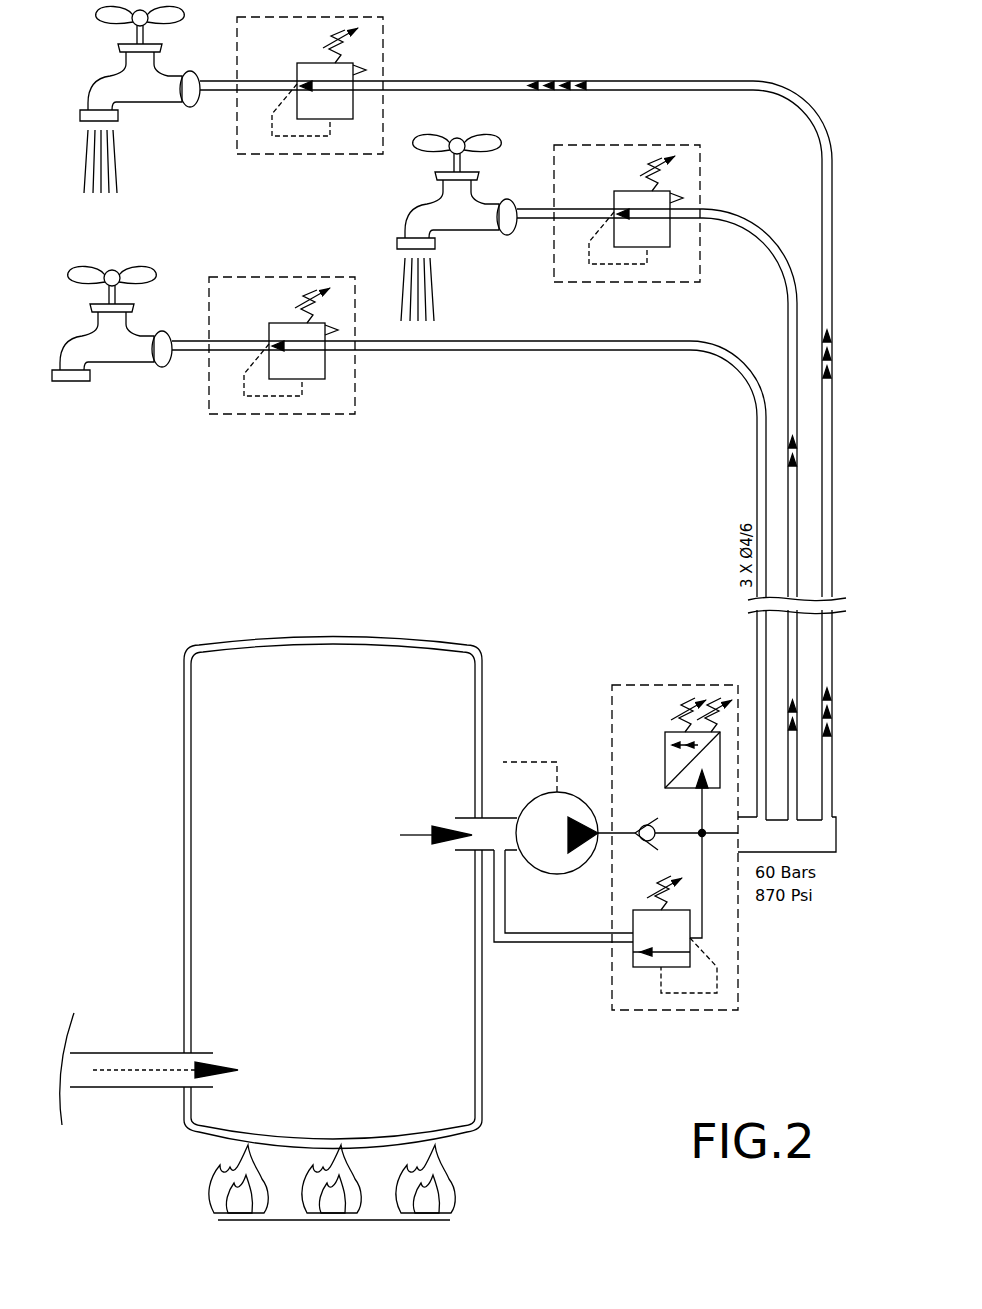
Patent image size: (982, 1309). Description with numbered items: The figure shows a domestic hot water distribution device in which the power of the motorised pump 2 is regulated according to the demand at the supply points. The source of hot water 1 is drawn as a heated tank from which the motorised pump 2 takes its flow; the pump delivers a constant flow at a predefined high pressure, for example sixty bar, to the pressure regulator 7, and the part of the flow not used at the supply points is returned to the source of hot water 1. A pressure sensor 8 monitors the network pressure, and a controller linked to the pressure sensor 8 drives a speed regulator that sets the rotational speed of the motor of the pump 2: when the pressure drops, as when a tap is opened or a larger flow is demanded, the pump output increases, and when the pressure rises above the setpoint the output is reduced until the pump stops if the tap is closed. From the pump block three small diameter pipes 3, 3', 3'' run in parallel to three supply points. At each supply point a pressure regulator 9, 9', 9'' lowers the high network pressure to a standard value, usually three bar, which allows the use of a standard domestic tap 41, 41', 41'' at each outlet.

The source of hot water 1 is at (238, 912).
The motorised pump 2 is at (553, 858).
The small diameter pipe 3 is at (560, 580).
The small diameter pipe 3' is at (729, 514).
The small diameter pipe 3'' is at (607, 418).
The pressure regulator 7 is at (655, 972).
The pressure sensor 8 is at (668, 765).
The pressure regulator 9 is at (253, 374).
The pressure regulator 9' is at (595, 241).
The pressure regulator 9'' is at (275, 112).
The standard domestic tap 41 is at (130, 346).
The standard domestic tap 41' is at (475, 227).
The standard domestic tap 41'' is at (158, 99).